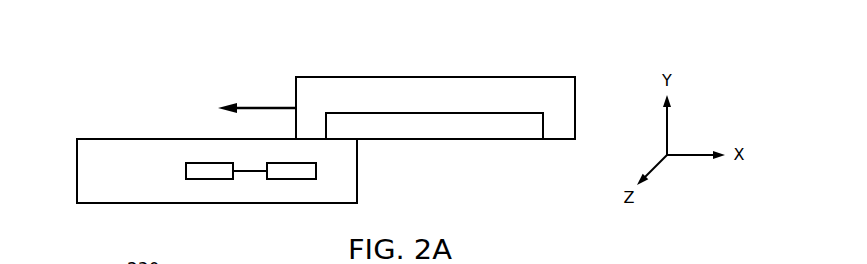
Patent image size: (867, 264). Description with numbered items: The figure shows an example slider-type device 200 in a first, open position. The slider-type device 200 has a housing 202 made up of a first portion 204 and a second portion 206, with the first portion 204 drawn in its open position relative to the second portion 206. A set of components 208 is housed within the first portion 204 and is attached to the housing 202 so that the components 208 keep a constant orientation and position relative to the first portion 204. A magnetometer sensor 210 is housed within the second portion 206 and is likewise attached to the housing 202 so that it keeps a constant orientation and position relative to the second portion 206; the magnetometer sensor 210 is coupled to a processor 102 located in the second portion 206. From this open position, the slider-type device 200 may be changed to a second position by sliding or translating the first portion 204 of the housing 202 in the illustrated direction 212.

The slider-type device 200 is at (122, 25).
The housing 202 is at (189, 159).
The first portion 204 is at (460, 96).
The second portion 206 is at (126, 131).
The set of components 208 is at (425, 113).
The magnetometer sensor 210 is at (215, 179).
The direction 212 is at (240, 98).
The processor 102 is at (270, 195).